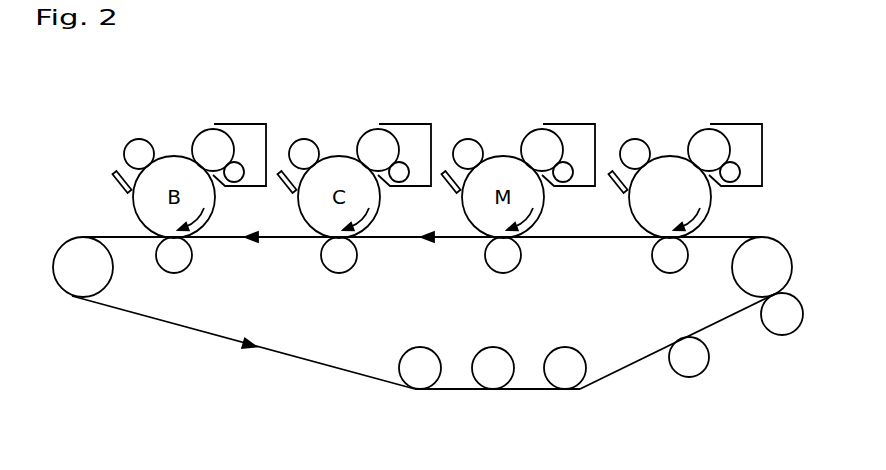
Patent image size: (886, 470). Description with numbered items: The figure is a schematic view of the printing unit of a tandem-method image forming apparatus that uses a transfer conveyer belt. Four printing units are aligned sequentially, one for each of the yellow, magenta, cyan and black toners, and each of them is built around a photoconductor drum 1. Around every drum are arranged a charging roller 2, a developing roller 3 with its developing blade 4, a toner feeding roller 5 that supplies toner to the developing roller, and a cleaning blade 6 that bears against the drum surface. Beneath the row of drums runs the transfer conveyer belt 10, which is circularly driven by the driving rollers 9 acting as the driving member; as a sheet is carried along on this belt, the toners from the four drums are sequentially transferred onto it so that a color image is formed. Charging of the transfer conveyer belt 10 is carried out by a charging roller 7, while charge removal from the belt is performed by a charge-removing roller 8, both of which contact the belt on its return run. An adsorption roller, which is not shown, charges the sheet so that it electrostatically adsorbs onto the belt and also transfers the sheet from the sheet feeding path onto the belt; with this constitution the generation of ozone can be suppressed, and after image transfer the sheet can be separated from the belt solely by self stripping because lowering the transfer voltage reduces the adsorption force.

The photoconductor drum 1 is at (697, 197).
The charging roller 2 is at (637, 122).
The developing roller 3 is at (707, 120).
The developing blade 4 is at (737, 129).
The toner feeding roller 5 is at (759, 160).
The cleaning blade 6 is at (611, 239).
The charging roller 7 is at (782, 347).
The charge-removing roller 8 is at (689, 390).
The driving roller 9 is at (83, 321).
The transfer conveyer belt 10 is at (423, 310).